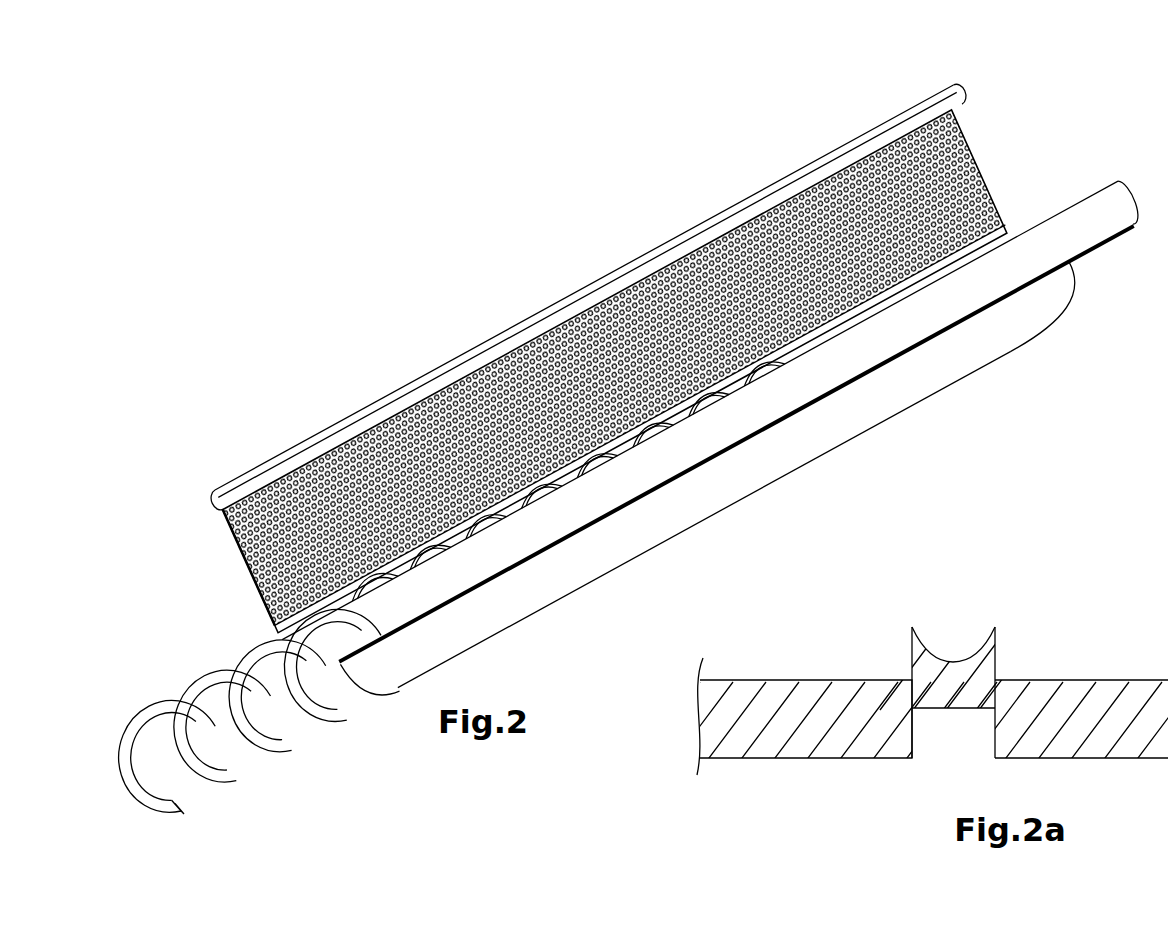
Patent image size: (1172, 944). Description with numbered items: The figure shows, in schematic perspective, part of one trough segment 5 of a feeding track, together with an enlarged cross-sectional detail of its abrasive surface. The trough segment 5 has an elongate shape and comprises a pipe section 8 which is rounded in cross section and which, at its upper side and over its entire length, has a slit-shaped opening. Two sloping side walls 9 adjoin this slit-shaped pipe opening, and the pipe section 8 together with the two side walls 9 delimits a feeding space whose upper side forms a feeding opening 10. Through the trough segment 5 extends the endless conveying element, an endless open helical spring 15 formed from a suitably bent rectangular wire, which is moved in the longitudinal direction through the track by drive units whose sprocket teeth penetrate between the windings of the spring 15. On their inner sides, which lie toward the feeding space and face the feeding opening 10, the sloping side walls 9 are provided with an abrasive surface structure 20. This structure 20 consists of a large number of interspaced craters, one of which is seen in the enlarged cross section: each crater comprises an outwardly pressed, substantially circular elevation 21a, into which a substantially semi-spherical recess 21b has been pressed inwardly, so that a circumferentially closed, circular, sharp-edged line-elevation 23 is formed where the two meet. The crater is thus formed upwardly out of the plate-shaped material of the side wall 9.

In FIG. 2, the trough segment 5 is at (617, 228).
In FIG. 2, the pipe section 8 is at (542, 592).
In FIG. 2, the sloping side walls 9 is at (560, 300).
In FIG. 2, the feeding opening 10 is at (1043, 148).
In FIG. 2, the helical spring 15 is at (294, 747).
In FIG. 2, the abrasive surface structure 20 is at (385, 472).
In FIG. 2A, the abrasive surface structure 20 is at (1003, 547).
In FIG. 2A, the circular elevation 21a is at (952, 725).
In FIG. 2A, the semi-spherical recess 21b is at (952, 650).
In FIG. 2A, the sharp-edged line-elevation 23 is at (910, 623).